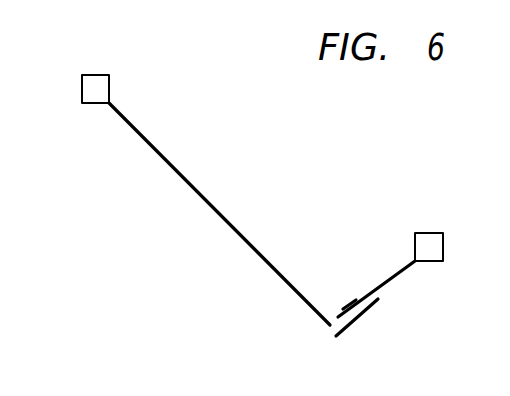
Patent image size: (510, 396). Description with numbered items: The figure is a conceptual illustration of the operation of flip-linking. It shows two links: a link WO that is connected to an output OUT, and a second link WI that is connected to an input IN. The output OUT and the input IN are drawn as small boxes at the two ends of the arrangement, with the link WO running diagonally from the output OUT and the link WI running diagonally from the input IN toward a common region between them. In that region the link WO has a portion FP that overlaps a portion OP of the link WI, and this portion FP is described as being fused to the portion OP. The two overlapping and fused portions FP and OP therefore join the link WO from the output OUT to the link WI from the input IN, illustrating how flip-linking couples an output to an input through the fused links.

The output OUT is at (108, 104).
The link WO is at (168, 161).
The input IN is at (415, 261).
The link WI is at (397, 274).
The portion FP is at (350, 303).
The portion OP is at (367, 307).